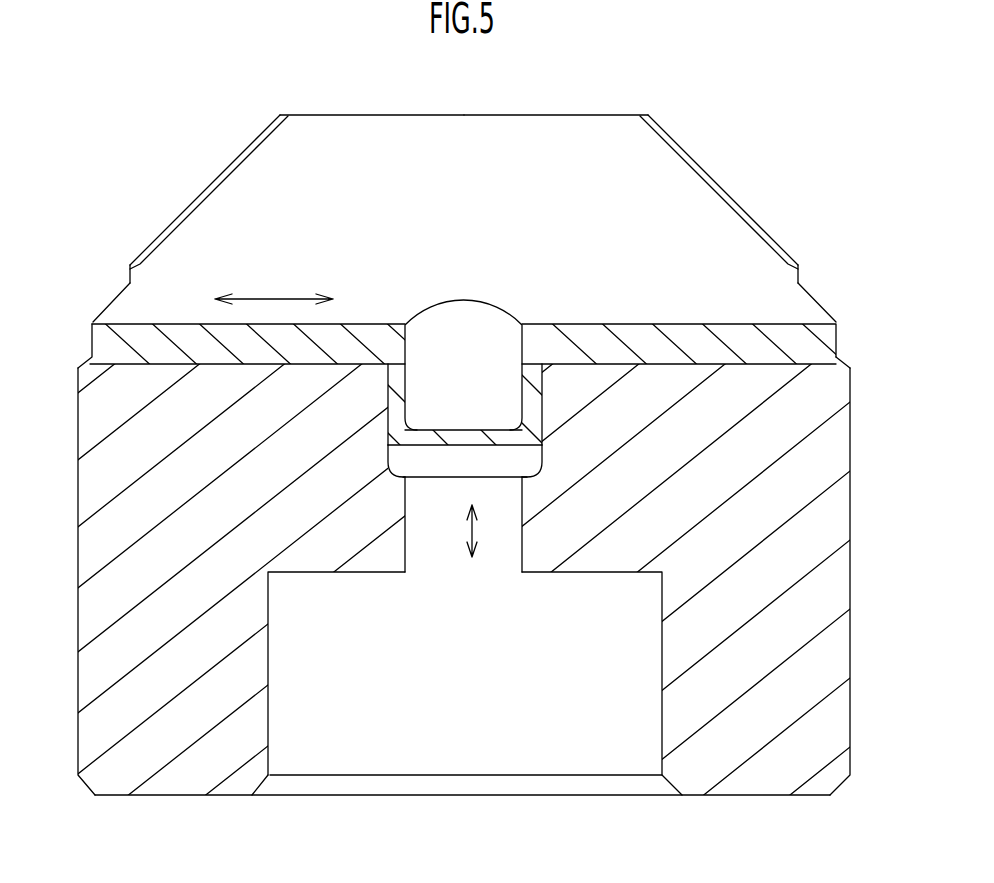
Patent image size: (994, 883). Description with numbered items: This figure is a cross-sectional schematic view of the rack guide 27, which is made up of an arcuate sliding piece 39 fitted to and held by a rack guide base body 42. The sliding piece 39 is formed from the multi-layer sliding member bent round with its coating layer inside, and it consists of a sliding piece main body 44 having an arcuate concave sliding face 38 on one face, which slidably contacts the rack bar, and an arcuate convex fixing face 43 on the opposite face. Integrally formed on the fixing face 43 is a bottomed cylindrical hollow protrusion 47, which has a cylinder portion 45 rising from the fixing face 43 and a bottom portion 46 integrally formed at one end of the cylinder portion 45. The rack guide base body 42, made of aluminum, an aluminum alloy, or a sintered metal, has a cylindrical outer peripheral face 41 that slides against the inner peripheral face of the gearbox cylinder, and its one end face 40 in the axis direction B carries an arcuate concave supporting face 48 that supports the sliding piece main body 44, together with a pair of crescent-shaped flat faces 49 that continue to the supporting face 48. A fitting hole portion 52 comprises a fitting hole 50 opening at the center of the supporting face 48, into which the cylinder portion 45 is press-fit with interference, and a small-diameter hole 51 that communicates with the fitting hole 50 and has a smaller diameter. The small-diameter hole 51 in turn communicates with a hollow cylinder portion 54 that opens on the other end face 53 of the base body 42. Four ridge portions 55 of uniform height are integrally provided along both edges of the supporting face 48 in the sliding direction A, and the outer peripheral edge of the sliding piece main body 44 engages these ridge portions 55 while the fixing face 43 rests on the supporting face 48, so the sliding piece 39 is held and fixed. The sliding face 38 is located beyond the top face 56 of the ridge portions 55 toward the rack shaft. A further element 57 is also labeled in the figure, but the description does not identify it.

The rack guide 27 is at (653, 108).
The arcuate concave sliding face 38 is at (683, 207).
The arcuate sliding piece 39 is at (740, 243).
The one end face 40 is at (492, 114).
The cylindrical outer peripheral face 41 is at (851, 540).
The rack guide base body 42 is at (815, 596).
The arcuate convex fixing face 43 is at (770, 372).
The sliding piece main body 44 is at (800, 348).
The cylinder portion 45 is at (531, 388).
The bottom portion 46 is at (456, 440).
The bottomed cylindrical hollow protrusion 47 is at (385, 455).
The arcuate concave supporting face 48 is at (137, 352).
The flat faces 49 is at (300, 114).
The fitting hole 50 is at (537, 468).
The small-diameter hole 51 is at (500, 560).
The fitting hole portion 52 is at (432, 463).
The other end face 53 is at (170, 797).
The hollow cylinder portion 54 is at (613, 764).
The ridge portions 55 is at (143, 253).
The top face 56 is at (222, 177).
The cavity side wall 57 is at (286, 580).